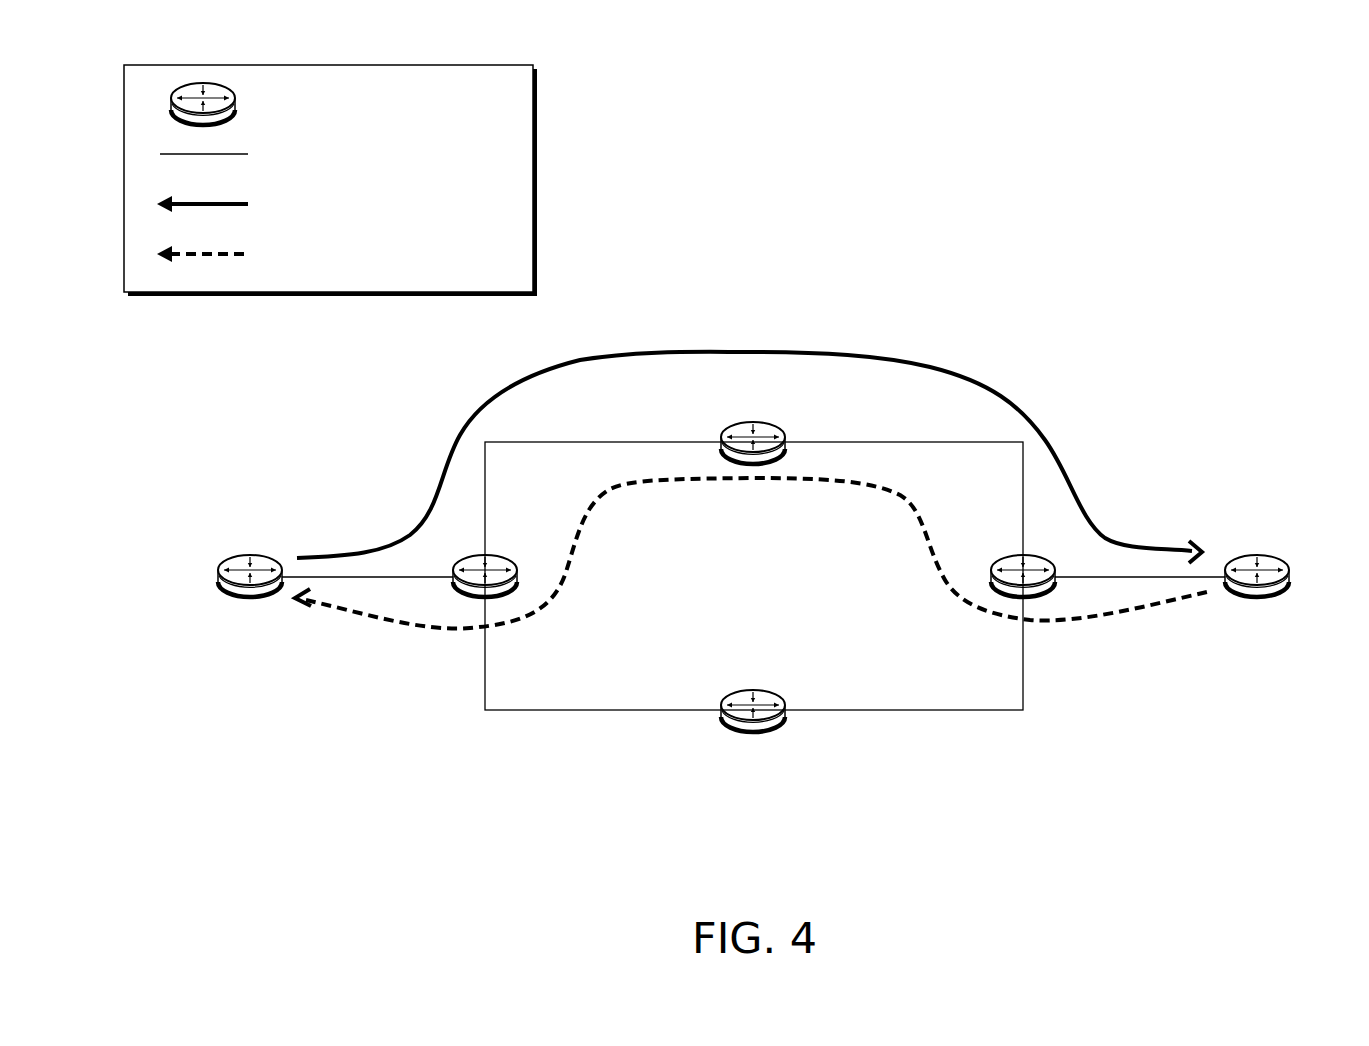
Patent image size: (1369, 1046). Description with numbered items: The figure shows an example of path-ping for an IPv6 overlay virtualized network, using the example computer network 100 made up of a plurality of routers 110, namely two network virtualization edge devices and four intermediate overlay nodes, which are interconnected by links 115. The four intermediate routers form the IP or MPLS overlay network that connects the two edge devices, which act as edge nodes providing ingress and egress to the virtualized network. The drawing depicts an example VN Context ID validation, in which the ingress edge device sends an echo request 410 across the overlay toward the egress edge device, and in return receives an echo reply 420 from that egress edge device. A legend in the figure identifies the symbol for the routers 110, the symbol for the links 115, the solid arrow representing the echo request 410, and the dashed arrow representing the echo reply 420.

The computer network 100 is at (1273, 129).
The routers 110 is at (730, 407).
The links 115 is at (692, 359).
The echo request 410 is at (679, 377).
The echo reply 420 is at (682, 435).